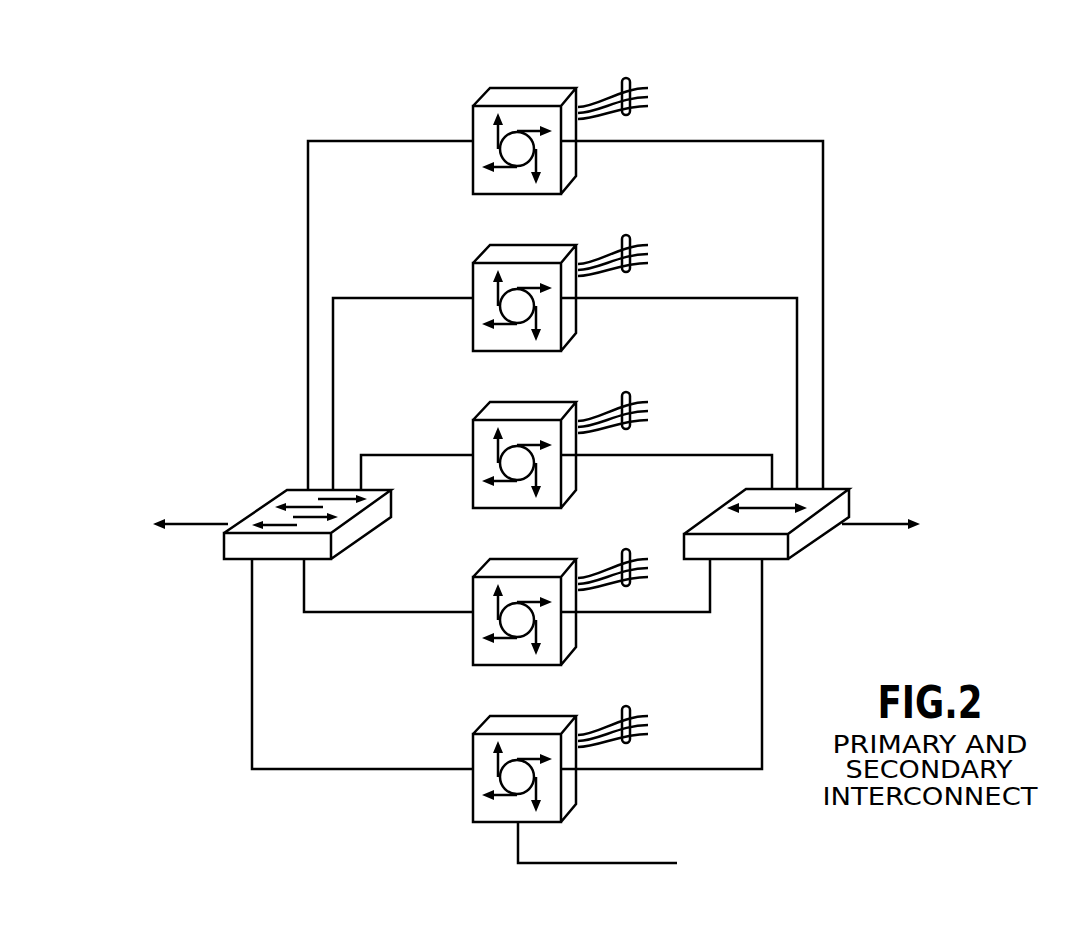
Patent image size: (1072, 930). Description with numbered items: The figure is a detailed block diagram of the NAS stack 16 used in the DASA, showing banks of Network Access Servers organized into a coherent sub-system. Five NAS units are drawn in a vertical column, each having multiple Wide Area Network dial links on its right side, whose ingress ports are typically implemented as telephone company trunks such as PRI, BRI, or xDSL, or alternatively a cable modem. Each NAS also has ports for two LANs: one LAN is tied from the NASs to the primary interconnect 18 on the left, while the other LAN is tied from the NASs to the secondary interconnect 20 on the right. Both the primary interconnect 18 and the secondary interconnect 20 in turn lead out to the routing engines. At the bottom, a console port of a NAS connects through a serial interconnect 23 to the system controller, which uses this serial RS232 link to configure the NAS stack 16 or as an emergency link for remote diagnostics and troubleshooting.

The NAS stack 16 is at (680, 52).
The primary interconnect 18 is at (265, 505).
The secondary interconnect 20 is at (810, 543).
The serial interconnect 23 is at (636, 863).